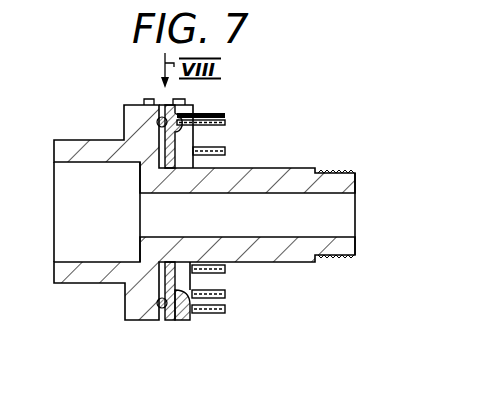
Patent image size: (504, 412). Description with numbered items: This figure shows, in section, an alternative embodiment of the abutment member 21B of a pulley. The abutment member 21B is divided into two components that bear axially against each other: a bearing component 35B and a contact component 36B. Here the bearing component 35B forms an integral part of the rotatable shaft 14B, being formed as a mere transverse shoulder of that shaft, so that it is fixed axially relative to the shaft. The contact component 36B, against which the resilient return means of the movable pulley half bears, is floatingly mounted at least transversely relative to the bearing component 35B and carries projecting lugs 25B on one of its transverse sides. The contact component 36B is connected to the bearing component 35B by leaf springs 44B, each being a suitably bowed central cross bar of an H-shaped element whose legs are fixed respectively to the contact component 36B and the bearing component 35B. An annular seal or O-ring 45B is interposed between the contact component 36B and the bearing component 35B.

The rotatable shaft 14B is at (342, 166).
The bearing component 35B is at (128, 313).
The leaf spring 44B is at (167, 102).
The annular seal or O-ring 45B is at (157, 123).
The abutment member 21B is at (161, 332).
The contact component 36B is at (186, 322).
The projecting lugs 25B is at (225, 150).